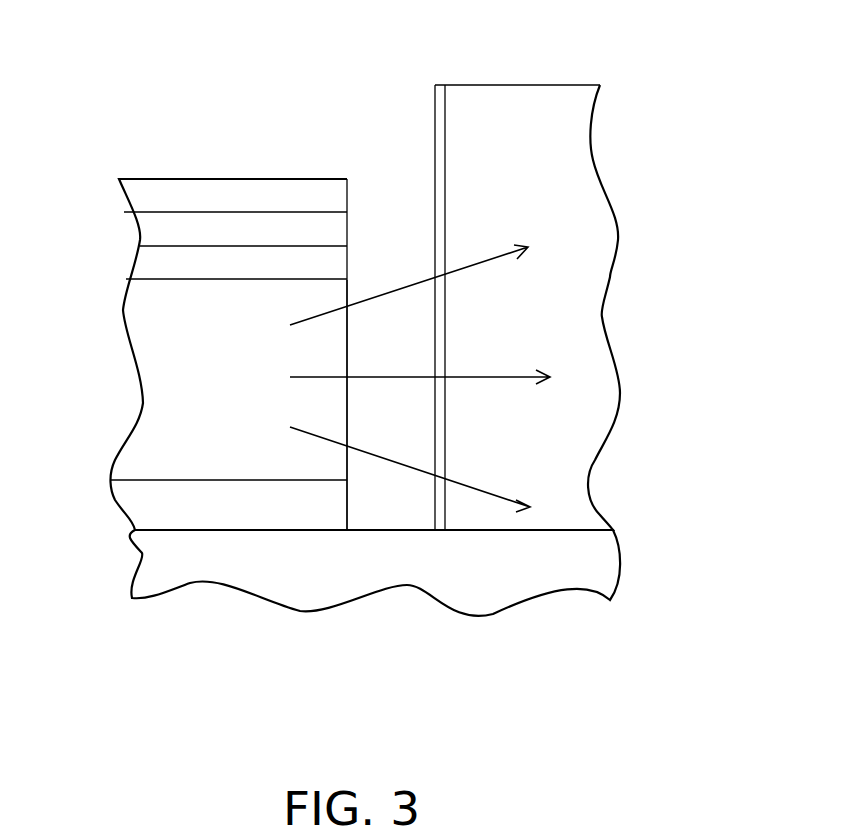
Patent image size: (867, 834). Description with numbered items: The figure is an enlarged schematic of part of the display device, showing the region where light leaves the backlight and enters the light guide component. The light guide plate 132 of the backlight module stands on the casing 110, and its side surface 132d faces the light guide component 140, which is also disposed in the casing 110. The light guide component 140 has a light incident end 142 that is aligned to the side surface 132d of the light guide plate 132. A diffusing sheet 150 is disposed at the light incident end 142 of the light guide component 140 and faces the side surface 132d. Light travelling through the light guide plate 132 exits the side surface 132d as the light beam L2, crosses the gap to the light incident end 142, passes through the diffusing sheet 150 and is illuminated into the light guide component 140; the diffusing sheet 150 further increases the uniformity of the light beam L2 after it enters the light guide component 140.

The casing 110 is at (503, 582).
The light guide plate 132 is at (187, 375).
The side surface 132d is at (362, 404).
The light guide component 140 is at (580, 417).
The light incident end 142 is at (449, 320).
The diffusing sheet 150 is at (440, 123).
The light beam L2 is at (395, 287).